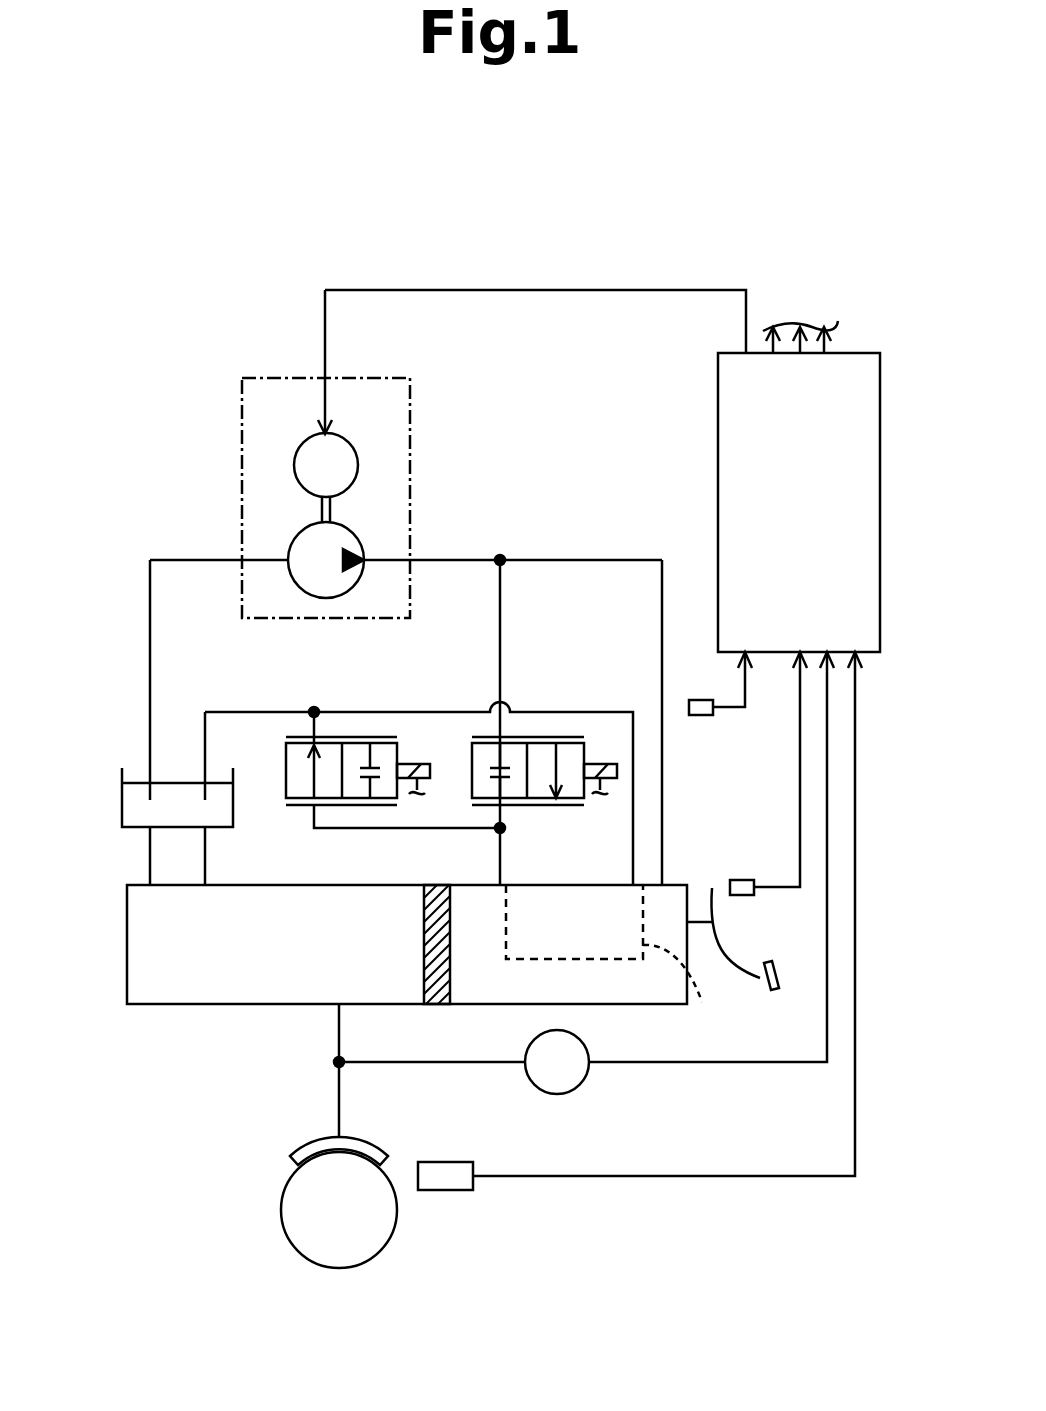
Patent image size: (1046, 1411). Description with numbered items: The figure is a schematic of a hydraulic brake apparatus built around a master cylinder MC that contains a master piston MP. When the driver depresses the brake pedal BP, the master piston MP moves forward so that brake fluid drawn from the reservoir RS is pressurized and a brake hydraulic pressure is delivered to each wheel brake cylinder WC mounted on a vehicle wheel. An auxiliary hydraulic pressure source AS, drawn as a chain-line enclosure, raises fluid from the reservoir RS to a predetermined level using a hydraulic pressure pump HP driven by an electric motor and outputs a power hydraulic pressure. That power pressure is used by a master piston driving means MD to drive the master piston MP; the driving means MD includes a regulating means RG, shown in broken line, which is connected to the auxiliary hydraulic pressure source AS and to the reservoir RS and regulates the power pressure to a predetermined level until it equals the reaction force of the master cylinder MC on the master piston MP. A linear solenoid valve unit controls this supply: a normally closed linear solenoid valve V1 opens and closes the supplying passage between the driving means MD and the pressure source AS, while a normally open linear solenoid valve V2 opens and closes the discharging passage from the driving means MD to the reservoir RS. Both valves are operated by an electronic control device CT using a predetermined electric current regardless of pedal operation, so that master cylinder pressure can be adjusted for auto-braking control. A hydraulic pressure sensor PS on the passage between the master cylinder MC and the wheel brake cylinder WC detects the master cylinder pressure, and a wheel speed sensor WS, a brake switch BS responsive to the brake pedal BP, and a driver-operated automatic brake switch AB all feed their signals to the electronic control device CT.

The auxiliary hydraulic pressure source AS is at (365, 378).
The hydraulic pressure pump HP is at (296, 540).
The electronic control device CT is at (718, 405).
The automatic brake switch AB is at (702, 700).
The reservoir RS is at (122, 800).
The normally closed type linear solenoid valve V1 is at (540, 808).
The normally open type linear solenoid valve V2 is at (298, 808).
The master cylinder MC is at (185, 1004).
The master piston MP is at (437, 1005).
The master piston driving means MD is at (615, 1004).
The regulating means RG is at (702, 986).
The brake switch BS is at (742, 880).
The brake pedal BP is at (736, 957).
The hydraulic pressure sensor PS is at (557, 1062).
The wheel brake cylinder WC is at (305, 1142).
The wheel speed sensor WS is at (450, 1162).